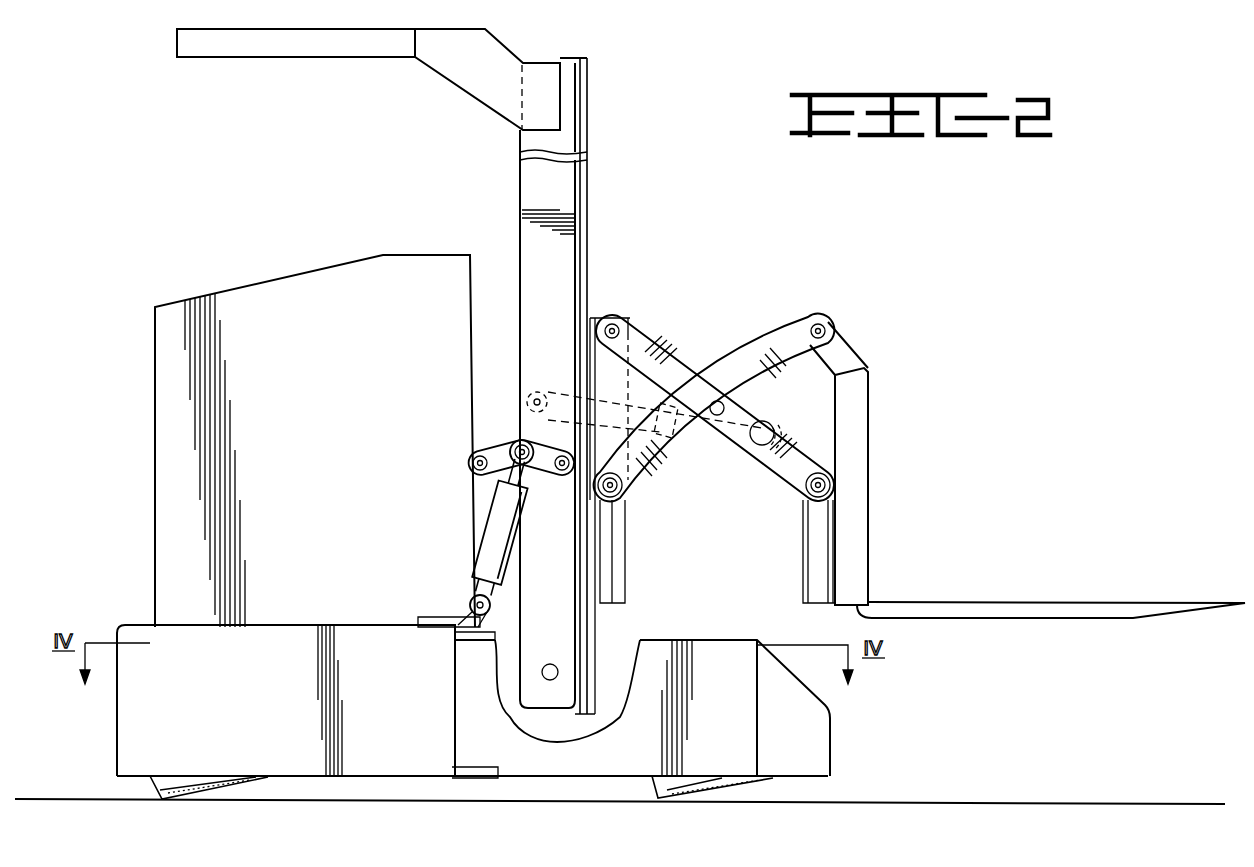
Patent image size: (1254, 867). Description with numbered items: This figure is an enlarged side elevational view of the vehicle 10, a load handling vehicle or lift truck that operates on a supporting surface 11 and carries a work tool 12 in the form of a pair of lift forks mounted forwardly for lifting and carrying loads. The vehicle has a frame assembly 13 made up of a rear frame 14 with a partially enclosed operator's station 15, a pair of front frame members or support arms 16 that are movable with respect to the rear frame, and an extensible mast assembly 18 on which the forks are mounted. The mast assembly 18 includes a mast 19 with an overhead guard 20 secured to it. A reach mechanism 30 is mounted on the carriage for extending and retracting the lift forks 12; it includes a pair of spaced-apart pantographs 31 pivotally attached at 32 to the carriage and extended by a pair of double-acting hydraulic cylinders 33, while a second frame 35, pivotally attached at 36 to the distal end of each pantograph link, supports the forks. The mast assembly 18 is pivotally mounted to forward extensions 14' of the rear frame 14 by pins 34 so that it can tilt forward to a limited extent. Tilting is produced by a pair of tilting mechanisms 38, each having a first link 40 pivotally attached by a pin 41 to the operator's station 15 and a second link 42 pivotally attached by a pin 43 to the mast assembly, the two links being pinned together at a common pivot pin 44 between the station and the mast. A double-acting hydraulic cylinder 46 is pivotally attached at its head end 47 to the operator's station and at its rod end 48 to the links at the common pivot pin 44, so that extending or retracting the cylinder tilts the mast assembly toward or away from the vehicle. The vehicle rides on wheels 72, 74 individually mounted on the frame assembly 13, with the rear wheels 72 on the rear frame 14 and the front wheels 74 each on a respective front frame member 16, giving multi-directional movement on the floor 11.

The vehicle 10 is at (699, 155).
The supporting surface 11 is at (885, 800).
The work tool 12 is at (953, 603).
The frame assembly 13 is at (135, 610).
The rear frame 14 is at (472, 701).
The forward extensions 14' is at (570, 676).
The operator's station 15 is at (326, 442).
The front frame members 16 is at (739, 695).
The mast assembly 18 is at (606, 379).
The mast 19 is at (600, 96).
The overhead guard 20 is at (255, 72).
The reach mechanism 30 is at (732, 312).
The pantographs 31 is at (688, 455).
The pivotal attachment 32 is at (616, 324).
The double-acting hydraulic cylinders 33 is at (678, 356).
The pins 34 is at (542, 673).
The second frame 35 is at (862, 504).
The pivotal attachment 36 is at (826, 328).
The tilting mechanisms 38 is at (470, 494).
The first link 40 is at (498, 452).
The pin 41 is at (474, 463).
The second link 42 is at (543, 455).
The pin 43 is at (562, 455).
The common pivot pin 44 is at (518, 446).
The double-acting hydraulic cylinder 46 is at (492, 535).
The head end 47 is at (470, 603).
The rod end 48 is at (524, 478).
The rear wheels 72 is at (214, 784).
The front wheels 74 is at (702, 790).